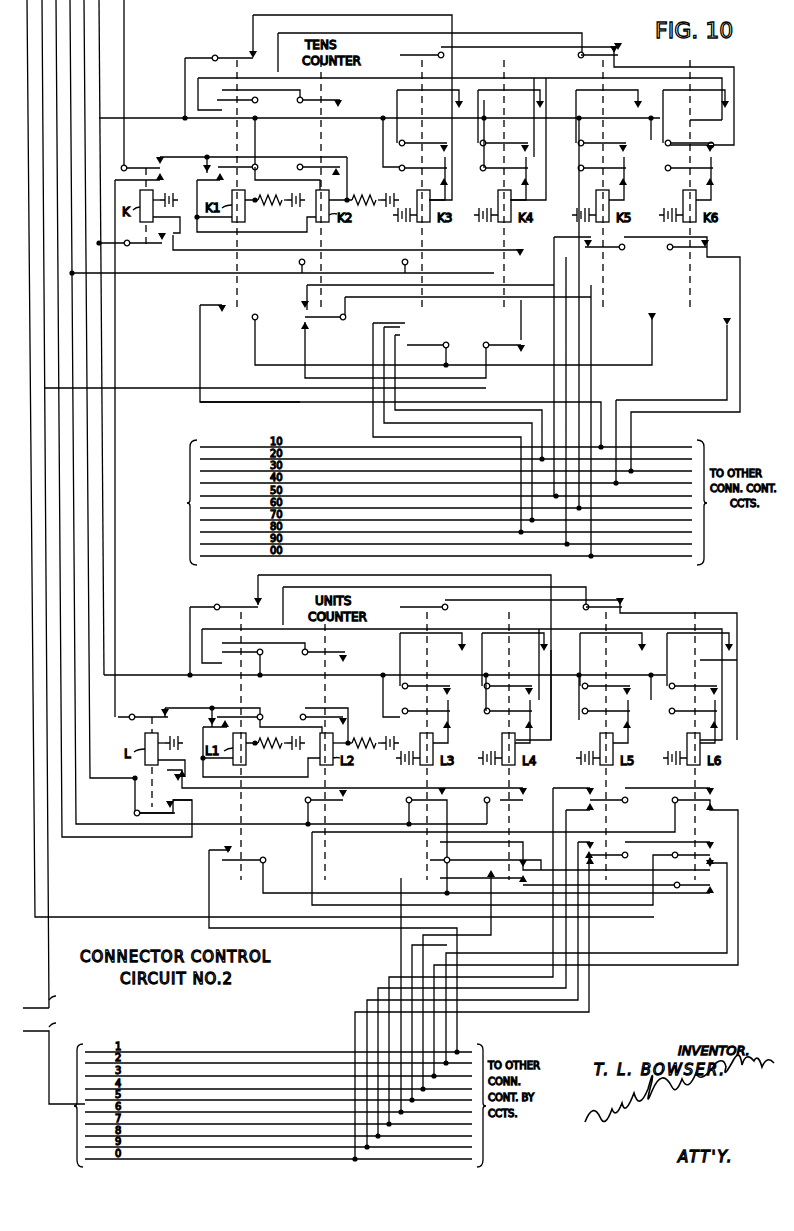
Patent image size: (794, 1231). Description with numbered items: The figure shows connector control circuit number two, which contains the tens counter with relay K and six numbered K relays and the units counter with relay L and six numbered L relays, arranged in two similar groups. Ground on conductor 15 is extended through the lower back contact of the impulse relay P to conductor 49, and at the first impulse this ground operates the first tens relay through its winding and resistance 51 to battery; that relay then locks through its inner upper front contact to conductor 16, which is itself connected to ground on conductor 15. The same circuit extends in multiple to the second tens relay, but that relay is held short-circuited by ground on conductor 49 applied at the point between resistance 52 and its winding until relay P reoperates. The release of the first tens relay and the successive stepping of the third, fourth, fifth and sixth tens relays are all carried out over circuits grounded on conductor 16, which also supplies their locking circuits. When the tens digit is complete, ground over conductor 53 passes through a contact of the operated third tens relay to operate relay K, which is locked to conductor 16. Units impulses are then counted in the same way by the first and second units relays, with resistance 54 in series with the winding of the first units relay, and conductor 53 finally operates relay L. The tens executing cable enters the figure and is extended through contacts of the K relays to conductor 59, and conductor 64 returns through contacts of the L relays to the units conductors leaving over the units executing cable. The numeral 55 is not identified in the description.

The conductor 15 is at (101, 26).
The conductor 16 is at (101, 33).
The conductor 49 is at (123, 62).
The resistance 51 is at (271, 206).
The resistance 52 is at (375, 222).
The conductor 53 is at (71, 102).
The resistance 54 is at (271, 749).
The conductor 55 is at (57, 118).
The conductor 59 is at (43, 89).
The conductor 64 is at (28, 63).